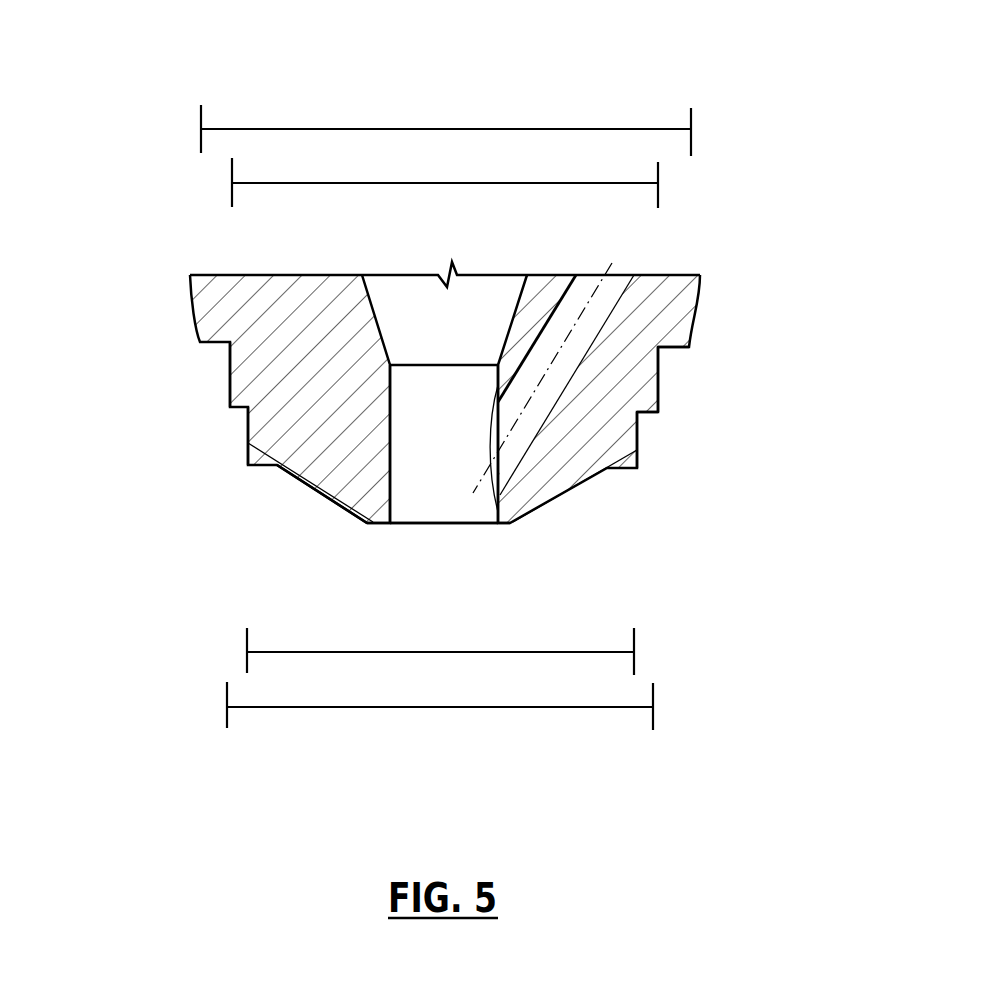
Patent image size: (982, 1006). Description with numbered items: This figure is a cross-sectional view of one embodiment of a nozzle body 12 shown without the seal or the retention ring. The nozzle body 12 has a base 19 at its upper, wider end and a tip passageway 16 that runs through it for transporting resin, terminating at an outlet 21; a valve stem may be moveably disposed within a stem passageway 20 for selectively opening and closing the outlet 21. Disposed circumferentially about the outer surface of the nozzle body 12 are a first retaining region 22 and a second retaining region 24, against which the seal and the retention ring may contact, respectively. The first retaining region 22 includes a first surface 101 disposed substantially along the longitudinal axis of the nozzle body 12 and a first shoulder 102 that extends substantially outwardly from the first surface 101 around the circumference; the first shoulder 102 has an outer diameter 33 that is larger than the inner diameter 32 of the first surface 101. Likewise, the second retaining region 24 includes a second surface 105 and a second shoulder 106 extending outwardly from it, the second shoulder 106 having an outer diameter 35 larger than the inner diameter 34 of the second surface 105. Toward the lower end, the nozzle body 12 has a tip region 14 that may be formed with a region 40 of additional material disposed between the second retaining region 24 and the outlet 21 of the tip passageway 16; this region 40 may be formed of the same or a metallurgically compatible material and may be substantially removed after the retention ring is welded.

The nozzle body 12 is at (138, 186).
The base 19 is at (736, 224).
The tip region 14 is at (282, 525).
The tip passageway 16 is at (410, 523).
The stem passageway 20 is at (523, 430).
The outlet 21 is at (462, 538).
The first retaining region 22 is at (205, 371).
The second retaining region 24 is at (213, 423).
The inner diameter 32 is at (348, 183).
The outer diameter 33 is at (470, 129).
The inner diameter 34 is at (605, 652).
The outer diameter 35 is at (588, 707).
The region of additional material 40 is at (247, 453).
The first surface 101 is at (660, 390).
The first shoulder 102 is at (672, 348).
The second surface 105 is at (640, 427).
The second shoulder 106 is at (645, 412).